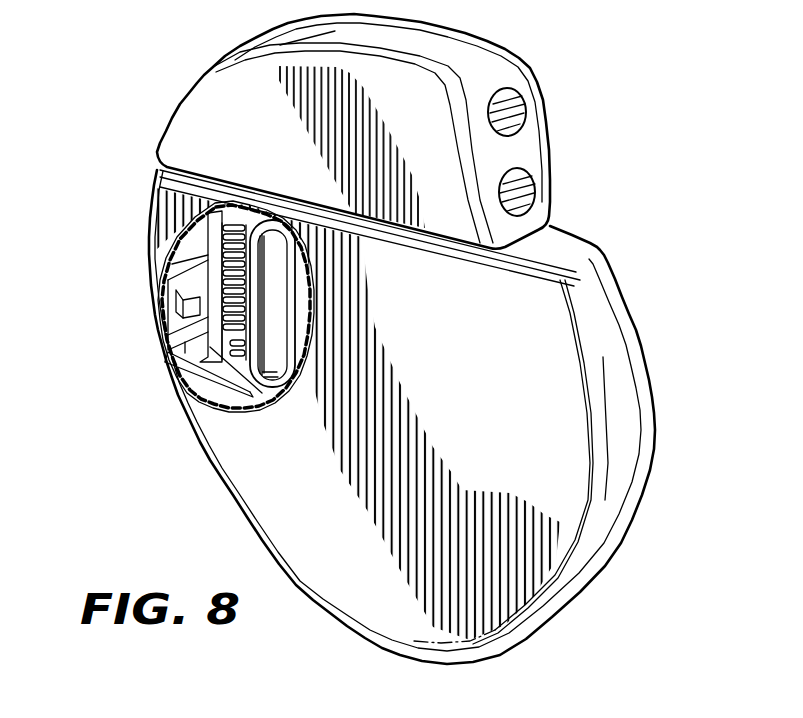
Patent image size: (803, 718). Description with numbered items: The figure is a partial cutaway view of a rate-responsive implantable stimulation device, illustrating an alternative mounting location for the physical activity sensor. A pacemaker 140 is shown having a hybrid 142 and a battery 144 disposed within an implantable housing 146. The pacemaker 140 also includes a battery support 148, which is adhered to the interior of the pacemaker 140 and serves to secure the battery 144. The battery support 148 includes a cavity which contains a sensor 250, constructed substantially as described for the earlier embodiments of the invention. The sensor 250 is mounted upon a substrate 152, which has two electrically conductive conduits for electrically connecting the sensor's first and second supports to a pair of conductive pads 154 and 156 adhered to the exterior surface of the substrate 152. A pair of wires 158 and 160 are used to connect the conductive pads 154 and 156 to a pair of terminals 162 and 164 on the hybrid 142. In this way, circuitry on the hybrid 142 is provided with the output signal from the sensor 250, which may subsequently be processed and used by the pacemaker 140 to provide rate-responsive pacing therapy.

The pacemaker 140 is at (178, 76).
The hybrid 142 is at (292, 294).
The battery 144 is at (205, 385).
The implantable housing 146 is at (580, 577).
The battery support 148 is at (187, 367).
The substrate 152 is at (182, 270).
The conductive pad 154 is at (165, 283).
The conductive pad 156 is at (217, 299).
The wire 158 is at (197, 313).
The wire 160 is at (177, 357).
The terminal 162 is at (264, 342).
The terminal 164 is at (246, 332).
The sensor 250 is at (197, 255).